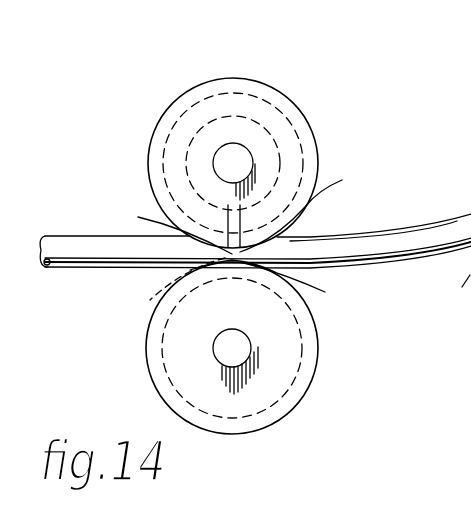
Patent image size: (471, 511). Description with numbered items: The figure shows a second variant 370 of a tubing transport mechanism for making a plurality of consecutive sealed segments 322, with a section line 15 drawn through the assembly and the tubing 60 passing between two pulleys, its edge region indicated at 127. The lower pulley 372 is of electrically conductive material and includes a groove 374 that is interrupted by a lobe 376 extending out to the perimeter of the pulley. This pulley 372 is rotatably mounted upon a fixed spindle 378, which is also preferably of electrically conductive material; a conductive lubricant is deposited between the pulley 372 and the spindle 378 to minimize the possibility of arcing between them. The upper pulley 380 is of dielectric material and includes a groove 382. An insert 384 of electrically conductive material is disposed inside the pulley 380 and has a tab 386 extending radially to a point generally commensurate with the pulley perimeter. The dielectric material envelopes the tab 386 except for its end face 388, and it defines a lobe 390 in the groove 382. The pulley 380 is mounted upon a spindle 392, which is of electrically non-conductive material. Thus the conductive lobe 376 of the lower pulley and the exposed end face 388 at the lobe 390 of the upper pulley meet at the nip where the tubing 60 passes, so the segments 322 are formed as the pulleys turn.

The section line 15- 15 is at (231, 23).
The tube 60 is at (90, 262).
The strip edge 127 is at (305, 263).
The sealed segments 322 is at (466, 214).
The variant 370 is at (368, 435).
The pulley 372 is at (290, 360).
The groove 374 is at (298, 391).
The lobe 376 is at (150, 287).
The spindle 378 is at (251, 337).
The pulley 380 is at (238, 248).
The groove 382 is at (303, 142).
The insert 384 is at (228, 248).
The tab 386 is at (196, 216).
The end face 388 is at (169, 227).
The lobe 390 is at (309, 209).
The spindle 392 is at (213, 160).